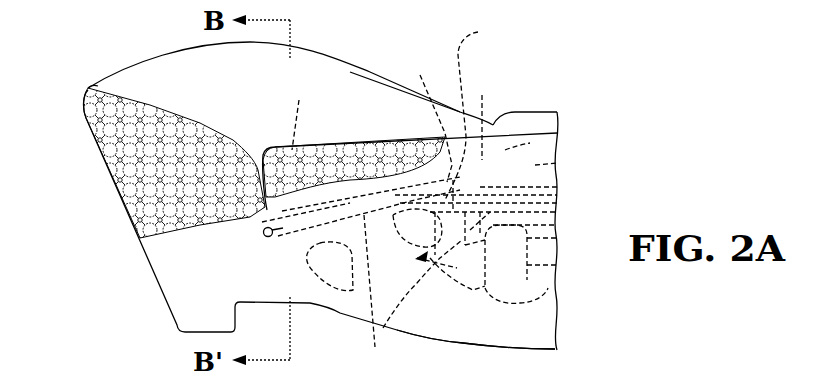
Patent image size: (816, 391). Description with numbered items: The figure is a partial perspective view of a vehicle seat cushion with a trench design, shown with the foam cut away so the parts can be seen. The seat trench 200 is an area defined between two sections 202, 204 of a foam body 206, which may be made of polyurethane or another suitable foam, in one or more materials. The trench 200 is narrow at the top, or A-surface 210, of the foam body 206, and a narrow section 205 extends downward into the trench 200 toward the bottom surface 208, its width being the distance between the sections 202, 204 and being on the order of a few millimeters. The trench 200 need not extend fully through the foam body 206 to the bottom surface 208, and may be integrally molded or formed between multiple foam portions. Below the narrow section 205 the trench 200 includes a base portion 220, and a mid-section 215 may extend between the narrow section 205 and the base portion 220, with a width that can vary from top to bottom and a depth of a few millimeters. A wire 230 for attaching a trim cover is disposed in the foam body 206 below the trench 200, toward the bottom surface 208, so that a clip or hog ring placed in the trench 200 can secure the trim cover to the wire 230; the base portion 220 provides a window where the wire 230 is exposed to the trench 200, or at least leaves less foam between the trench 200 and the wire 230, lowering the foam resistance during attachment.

The seat trench 200 is at (318, 170).
The section of the foam body 202 is at (195, 66).
The section of the foam body 204 is at (481, 109).
The narrow section 205 is at (265, 207).
The foam body 206 is at (78, 86).
The bottom surface 208 is at (447, 343).
The A-surface 210 is at (350, 70).
The mid-section 215 is at (369, 115).
The base portion 220 is at (230, 252).
The wire 230 is at (409, 298).